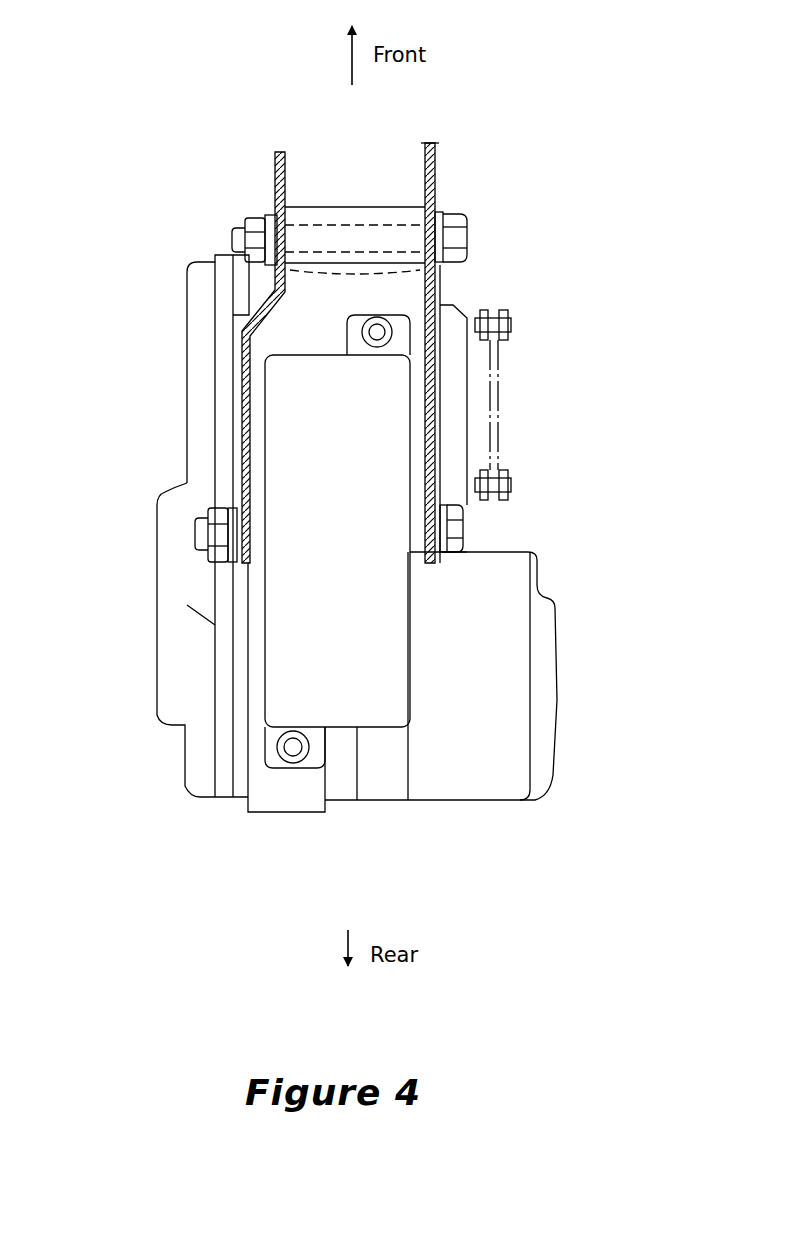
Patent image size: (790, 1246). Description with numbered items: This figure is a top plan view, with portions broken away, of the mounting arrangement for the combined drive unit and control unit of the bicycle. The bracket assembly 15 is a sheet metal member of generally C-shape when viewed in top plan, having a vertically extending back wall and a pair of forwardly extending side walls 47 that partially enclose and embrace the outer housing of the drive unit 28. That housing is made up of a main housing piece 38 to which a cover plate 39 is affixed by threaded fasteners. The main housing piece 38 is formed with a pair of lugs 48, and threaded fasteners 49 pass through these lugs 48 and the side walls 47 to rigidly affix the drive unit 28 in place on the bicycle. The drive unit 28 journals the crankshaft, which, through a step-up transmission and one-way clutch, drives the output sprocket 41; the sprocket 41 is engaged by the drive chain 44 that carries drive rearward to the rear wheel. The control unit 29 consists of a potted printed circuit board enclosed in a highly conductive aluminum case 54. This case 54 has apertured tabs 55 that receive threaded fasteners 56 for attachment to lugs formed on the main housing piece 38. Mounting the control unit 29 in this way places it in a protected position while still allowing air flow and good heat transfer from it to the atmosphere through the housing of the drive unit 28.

The bracket assembly 15 is at (158, 249).
The drive unit 28 is at (176, 382).
The control unit 29 is at (423, 664).
The main housing piece 38 is at (312, 812).
The cover plate 39 is at (185, 408).
The output sprocket 41 is at (498, 413).
The drive chain 44 is at (508, 313).
The side walls 47 is at (277, 152).
The lugs 48 is at (357, 205).
The threaded fasteners 49 is at (257, 212).
The aluminum case 54 is at (393, 608).
The tabs 55 is at (348, 336).
The threaded fasteners 56 is at (347, 330).